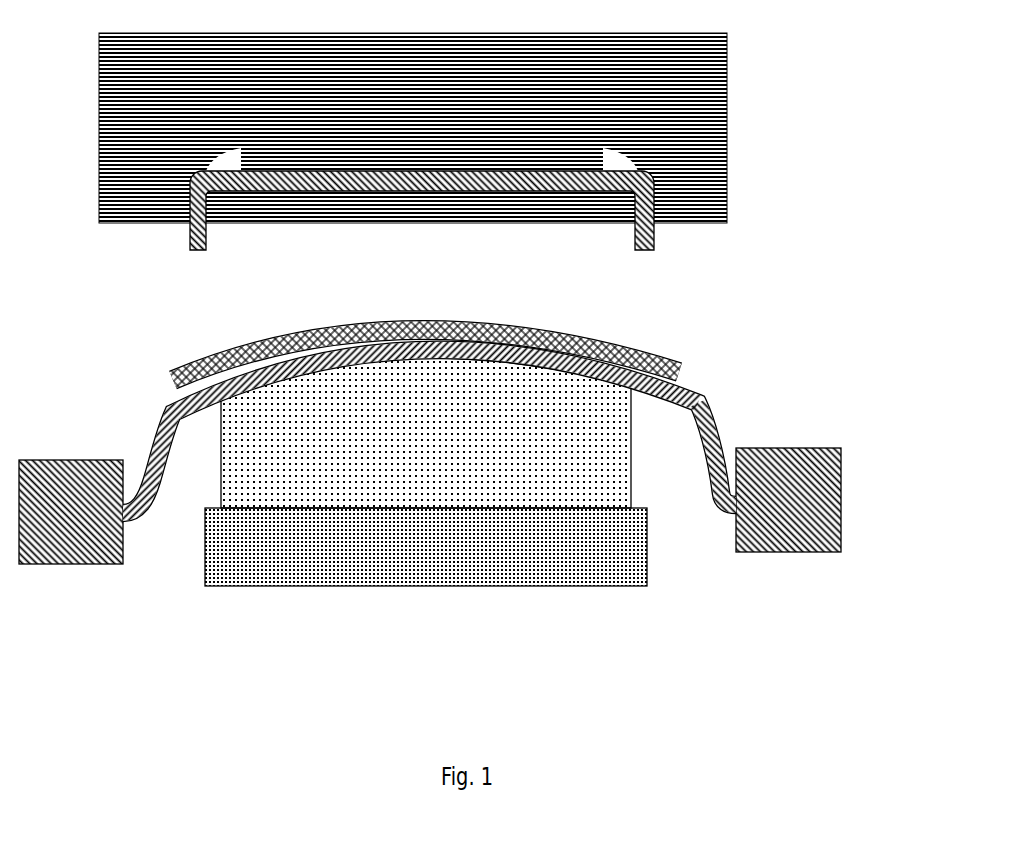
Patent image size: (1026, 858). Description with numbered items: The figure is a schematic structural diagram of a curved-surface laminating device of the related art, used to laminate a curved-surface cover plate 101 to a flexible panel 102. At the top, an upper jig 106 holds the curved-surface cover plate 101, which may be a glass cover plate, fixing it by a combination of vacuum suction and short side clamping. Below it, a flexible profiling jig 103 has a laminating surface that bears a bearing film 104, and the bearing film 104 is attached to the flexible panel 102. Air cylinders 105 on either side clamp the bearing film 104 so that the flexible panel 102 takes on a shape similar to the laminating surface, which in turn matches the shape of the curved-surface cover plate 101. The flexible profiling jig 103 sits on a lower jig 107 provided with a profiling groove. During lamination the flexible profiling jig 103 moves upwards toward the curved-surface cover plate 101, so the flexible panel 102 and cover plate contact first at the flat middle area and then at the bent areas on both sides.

The curved-surface cover plate 101 is at (646, 227).
The flexible panel 102 is at (605, 333).
The flexible profiling jig 103 is at (623, 445).
The bearing film 104 is at (697, 403).
The air cylinders 105 is at (833, 488).
The upper jig 106 is at (719, 99).
The lower jig 107 is at (418, 578).